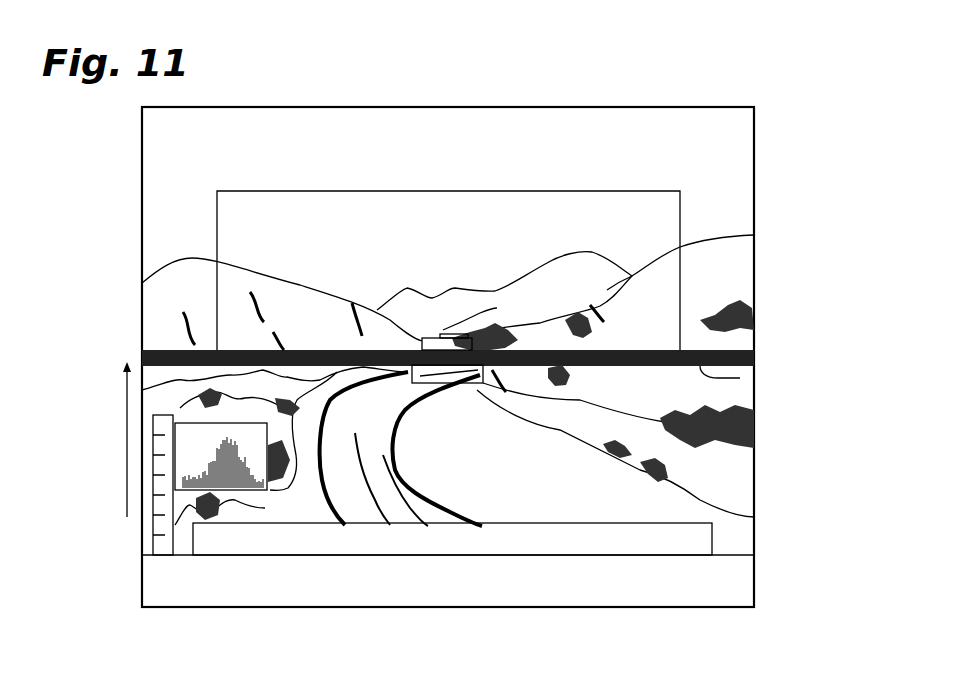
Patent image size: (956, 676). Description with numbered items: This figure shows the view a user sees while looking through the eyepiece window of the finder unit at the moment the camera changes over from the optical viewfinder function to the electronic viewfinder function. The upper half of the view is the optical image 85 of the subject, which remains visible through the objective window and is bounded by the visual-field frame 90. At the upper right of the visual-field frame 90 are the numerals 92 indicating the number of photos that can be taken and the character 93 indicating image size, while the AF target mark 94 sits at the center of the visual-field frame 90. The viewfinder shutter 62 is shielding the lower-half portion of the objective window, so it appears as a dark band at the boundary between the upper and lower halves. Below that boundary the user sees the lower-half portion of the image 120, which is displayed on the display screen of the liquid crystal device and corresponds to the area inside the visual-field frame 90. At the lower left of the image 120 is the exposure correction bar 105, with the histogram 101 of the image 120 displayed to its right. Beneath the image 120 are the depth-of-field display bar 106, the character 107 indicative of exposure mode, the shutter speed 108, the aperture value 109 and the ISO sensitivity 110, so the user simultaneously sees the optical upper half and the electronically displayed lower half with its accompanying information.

The optical image 85 is at (755, 338).
The visual-field frame 90 is at (323, 191).
The numerals indicating the number of photos that can be taken 92 is at (549, 169).
The character indicating image size 93 is at (647, 167).
The AF target mark 94 is at (443, 330).
The viewfinder shutter 62 is at (755, 372).
The image 120 is at (755, 488).
The histogram 101 is at (237, 507).
The exposure correction bar 105 is at (148, 540).
The depth-of-field display bar 106 is at (533, 523).
The character indicative of exposure mode 107 is at (205, 585).
The shutter speed 108 is at (362, 590).
The aperture value 109 is at (506, 585).
The ISO sensitivity 110 is at (640, 590).